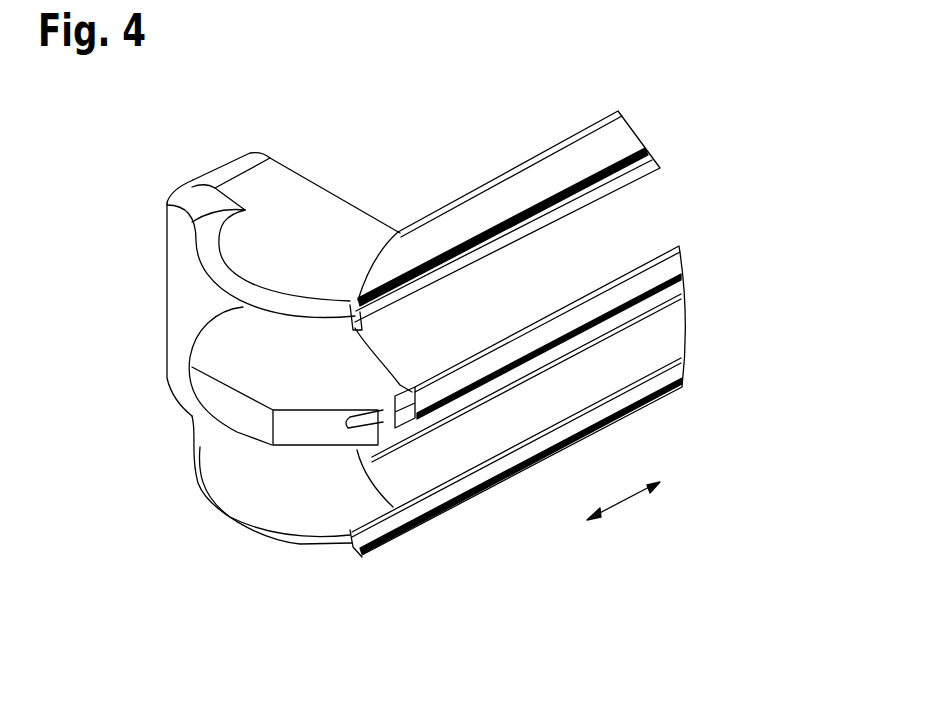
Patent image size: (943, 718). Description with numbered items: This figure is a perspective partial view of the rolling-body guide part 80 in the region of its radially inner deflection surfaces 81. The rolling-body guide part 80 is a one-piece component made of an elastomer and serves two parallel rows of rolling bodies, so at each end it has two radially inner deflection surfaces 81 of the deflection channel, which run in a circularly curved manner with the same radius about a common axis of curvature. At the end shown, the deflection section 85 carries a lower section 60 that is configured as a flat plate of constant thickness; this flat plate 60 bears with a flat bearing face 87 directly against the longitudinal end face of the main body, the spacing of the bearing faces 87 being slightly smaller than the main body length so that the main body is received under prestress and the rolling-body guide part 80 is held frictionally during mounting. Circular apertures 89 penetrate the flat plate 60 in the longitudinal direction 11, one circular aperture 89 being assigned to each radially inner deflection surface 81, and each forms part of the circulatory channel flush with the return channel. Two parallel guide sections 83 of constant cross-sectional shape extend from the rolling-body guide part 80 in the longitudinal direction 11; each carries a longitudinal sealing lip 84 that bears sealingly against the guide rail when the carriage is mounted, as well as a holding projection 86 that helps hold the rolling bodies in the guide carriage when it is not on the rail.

The rolling-body guide part 80 is at (644, 82).
The lower section 60 is at (181, 274).
The circular aperture 89 is at (166, 203).
The deflection section 85 is at (290, 227).
The flat bearing face 87 is at (346, 196).
The radially inner deflection surface 81 is at (238, 358).
The guide section 83 is at (610, 143).
The longitudinal sealing lip 84 is at (352, 306).
The holding projection 86 is at (522, 236).
The longitudinal direction 11 is at (623, 500).